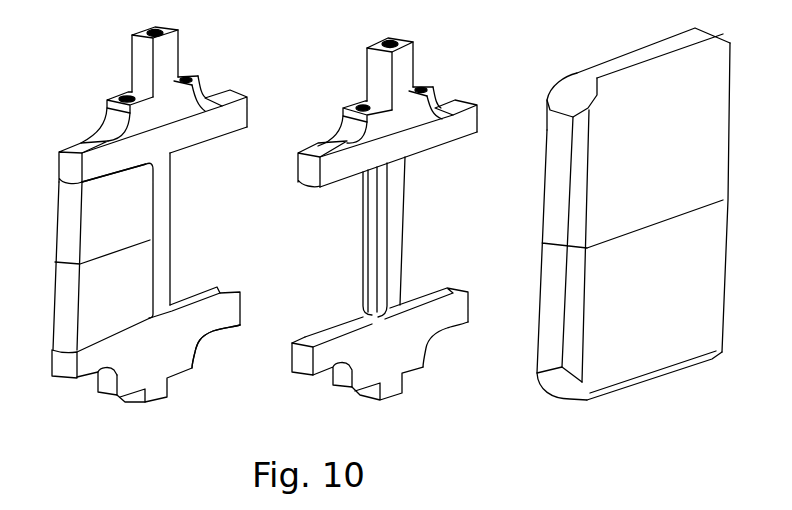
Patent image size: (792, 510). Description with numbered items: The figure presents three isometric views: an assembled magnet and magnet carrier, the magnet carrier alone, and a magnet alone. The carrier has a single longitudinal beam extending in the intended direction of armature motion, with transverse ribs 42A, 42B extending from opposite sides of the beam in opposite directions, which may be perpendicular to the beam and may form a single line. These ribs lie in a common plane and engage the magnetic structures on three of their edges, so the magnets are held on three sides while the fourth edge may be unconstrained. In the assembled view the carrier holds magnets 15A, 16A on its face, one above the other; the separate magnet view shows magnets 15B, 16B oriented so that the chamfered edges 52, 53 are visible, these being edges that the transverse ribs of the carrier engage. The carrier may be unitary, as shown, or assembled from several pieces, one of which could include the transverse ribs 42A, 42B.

The magnet 15A is at (137, 217).
The magnet 16A is at (127, 301).
The magnet 15B is at (672, 171).
The magnet 16B is at (662, 310).
The transverse rib 42A is at (225, 88).
The transverse rib 42B is at (81, 136).
The edge 52 is at (560, 217).
The edge 53 is at (627, 53).